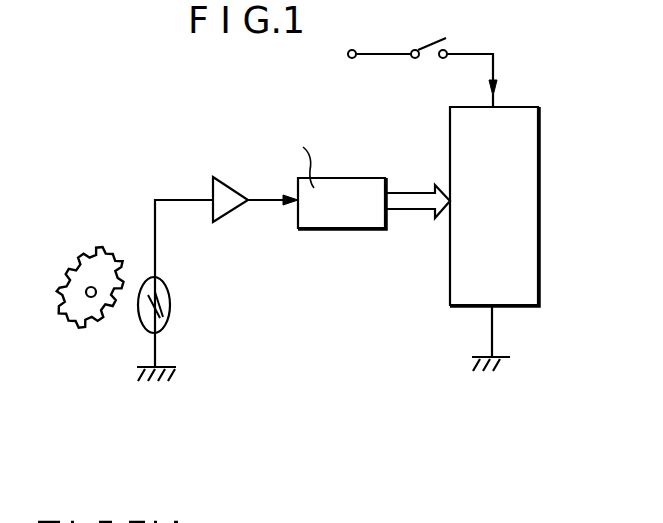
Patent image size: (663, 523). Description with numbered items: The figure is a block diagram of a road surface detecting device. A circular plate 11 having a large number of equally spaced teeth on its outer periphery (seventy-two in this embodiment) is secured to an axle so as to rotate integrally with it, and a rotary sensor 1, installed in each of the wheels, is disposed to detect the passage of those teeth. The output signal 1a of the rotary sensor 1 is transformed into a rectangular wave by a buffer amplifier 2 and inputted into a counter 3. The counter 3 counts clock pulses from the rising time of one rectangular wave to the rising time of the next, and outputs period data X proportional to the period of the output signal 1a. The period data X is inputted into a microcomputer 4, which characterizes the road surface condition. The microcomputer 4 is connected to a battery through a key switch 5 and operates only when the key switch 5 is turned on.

The rotary sensor 1 is at (143, 330).
The output signal 1a is at (172, 200).
The buffer amplifier 2 is at (243, 233).
The counter 3 is at (357, 180).
The microcomputer 4 is at (539, 107).
The key switch 5 is at (427, 60).
The circular plate 11 is at (85, 285).
The period data X is at (410, 212).